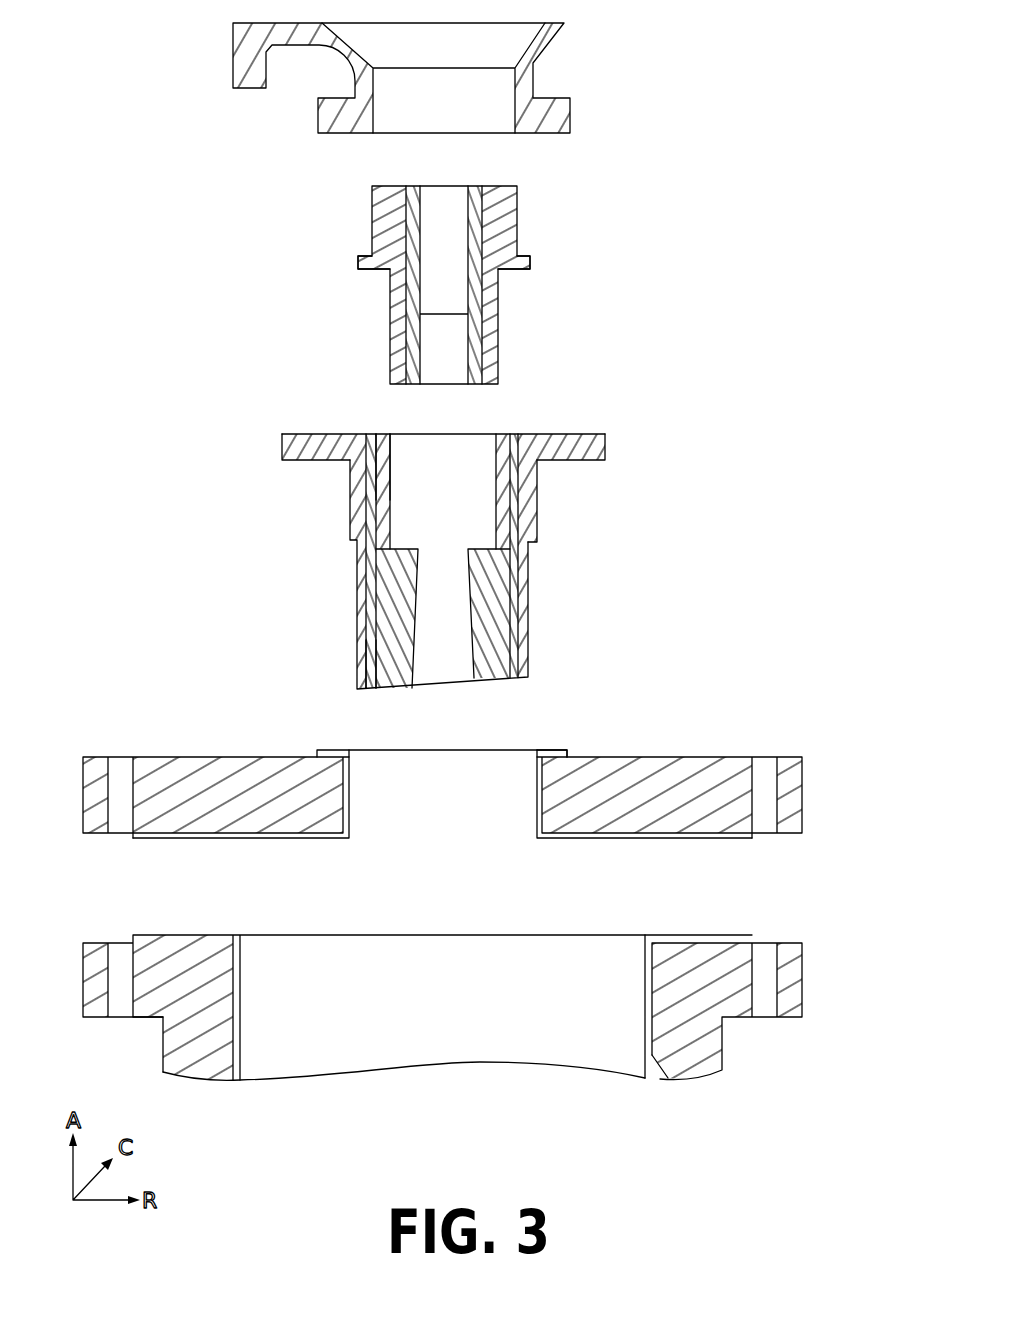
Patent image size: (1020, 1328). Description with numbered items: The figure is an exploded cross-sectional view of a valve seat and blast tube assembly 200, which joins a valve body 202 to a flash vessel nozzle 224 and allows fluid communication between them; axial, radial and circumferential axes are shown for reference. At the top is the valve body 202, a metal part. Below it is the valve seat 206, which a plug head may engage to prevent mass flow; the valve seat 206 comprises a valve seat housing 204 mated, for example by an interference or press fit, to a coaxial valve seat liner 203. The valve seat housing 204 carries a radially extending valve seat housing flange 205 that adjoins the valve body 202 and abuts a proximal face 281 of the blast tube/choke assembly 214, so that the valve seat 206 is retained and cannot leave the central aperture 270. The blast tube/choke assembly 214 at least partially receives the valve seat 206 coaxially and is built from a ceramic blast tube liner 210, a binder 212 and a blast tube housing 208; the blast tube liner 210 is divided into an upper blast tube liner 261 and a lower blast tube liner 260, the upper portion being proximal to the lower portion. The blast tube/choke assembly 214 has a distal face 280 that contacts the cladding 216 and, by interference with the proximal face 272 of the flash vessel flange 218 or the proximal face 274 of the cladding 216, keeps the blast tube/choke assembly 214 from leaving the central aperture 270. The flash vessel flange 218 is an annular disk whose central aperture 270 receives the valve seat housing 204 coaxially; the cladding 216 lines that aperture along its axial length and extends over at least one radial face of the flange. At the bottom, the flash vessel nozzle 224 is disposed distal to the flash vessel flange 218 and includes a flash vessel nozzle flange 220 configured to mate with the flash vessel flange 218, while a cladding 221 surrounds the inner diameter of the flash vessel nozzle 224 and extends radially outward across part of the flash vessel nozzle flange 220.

The valve seat and blast tube assembly 200 is at (188, 78).
The valve body 202 is at (533, 68).
The valve seat liner 203 is at (473, 353).
The valve seat housing 204 is at (442, 274).
The valve seat housing flange 205 is at (530, 257).
The valve seat 206 is at (350, 263).
The blast tube housing 208 is at (334, 796).
The blast tube liner 210 is at (398, 633).
The binder 212 is at (506, 561).
The blast tube/choke assembly 214 is at (552, 518).
The cladding 216 is at (541, 777).
The flash vessel flange 218 is at (153, 762).
The flash vessel nozzle flange 220 is at (442, 1037).
The cladding 221 is at (655, 1067).
The flash vessel nozzle 224 is at (170, 1035).
The lower blast tube liner 260 is at (388, 678).
The upper blast tube liner 261 is at (383, 490).
The central aperture 270 is at (380, 760).
The proximal face 272 is at (310, 757).
The proximal face 274 is at (541, 749).
The distal face 280 is at (400, 421).
The proximal face 281 is at (310, 434).